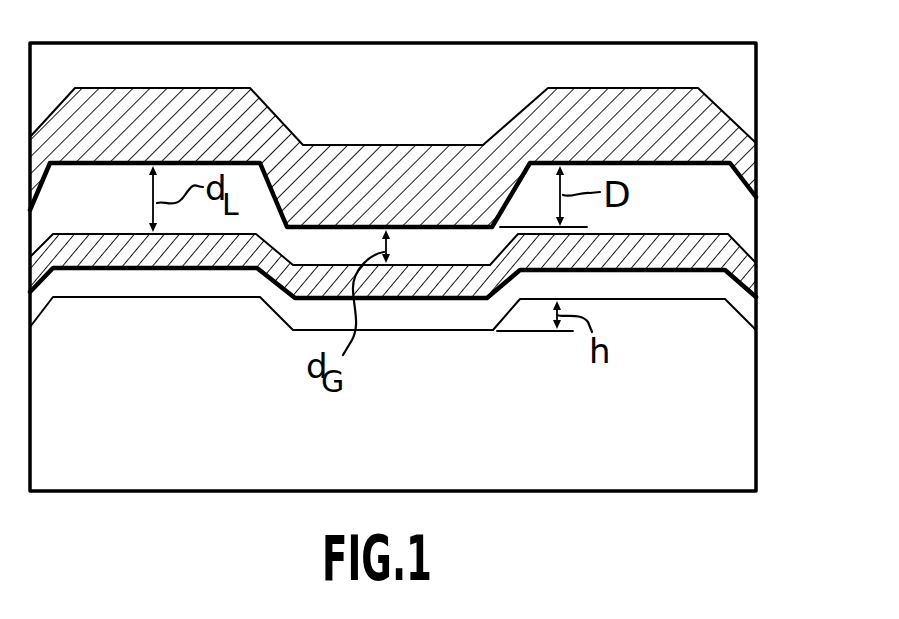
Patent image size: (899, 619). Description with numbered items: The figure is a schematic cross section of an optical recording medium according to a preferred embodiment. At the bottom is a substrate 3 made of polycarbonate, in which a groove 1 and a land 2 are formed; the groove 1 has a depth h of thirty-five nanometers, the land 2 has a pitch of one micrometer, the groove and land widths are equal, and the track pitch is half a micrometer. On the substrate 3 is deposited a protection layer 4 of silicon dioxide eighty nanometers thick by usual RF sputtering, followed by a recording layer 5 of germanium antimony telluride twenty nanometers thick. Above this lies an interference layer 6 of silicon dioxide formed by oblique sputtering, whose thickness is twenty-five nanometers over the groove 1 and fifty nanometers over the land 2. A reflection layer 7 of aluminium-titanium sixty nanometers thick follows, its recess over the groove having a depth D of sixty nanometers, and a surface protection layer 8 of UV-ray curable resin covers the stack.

The groove 1 is at (415, 327).
The land 2 is at (167, 298).
The substrate 3 is at (733, 400).
The protection layer 4 is at (757, 320).
The recording layer 5 is at (757, 270).
The interference layer 6 is at (737, 215).
The reflection layer 7 is at (740, 137).
The surface protection layer 8 is at (730, 90).